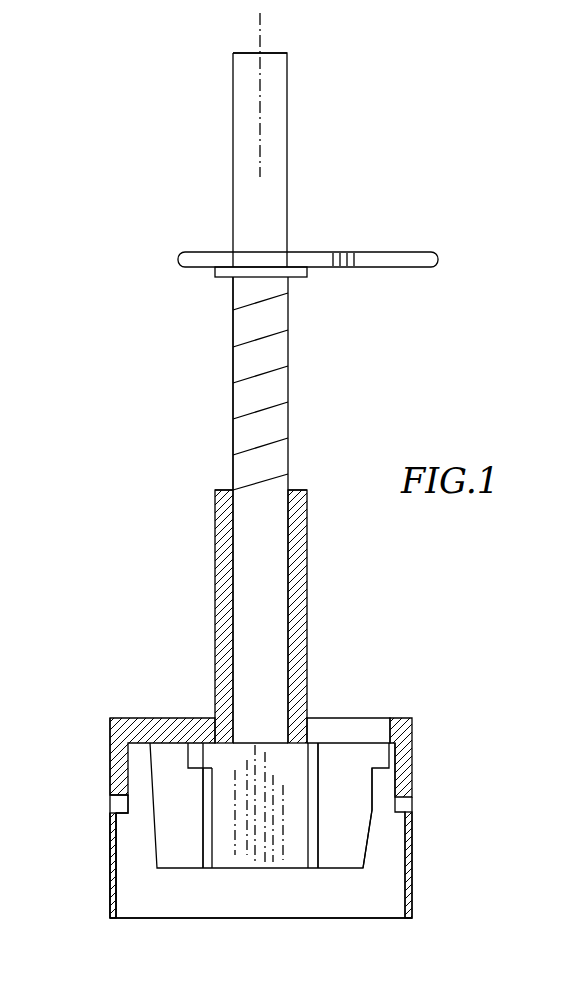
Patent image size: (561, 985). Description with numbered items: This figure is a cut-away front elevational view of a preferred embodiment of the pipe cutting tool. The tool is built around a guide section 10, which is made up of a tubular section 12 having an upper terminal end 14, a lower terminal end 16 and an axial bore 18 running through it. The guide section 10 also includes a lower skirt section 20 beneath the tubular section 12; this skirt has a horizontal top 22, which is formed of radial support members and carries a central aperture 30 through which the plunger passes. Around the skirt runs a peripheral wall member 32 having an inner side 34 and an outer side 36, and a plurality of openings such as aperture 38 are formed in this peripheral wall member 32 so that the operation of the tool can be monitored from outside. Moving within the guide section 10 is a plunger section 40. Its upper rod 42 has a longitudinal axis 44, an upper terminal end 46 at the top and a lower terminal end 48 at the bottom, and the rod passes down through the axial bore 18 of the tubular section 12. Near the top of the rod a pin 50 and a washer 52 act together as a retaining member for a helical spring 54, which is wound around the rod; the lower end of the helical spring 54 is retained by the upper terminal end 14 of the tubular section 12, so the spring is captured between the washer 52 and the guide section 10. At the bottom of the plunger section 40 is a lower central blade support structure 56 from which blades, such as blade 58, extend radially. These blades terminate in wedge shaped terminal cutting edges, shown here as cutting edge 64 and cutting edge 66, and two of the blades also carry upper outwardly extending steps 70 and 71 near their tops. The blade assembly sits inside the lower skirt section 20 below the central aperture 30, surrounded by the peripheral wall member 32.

The guide section 10 is at (374, 632).
The tubular section 12 is at (307, 542).
The upper terminal end 14 is at (305, 490).
The lower terminal end 16 is at (313, 720).
The axial bore 18 is at (245, 567).
The lower skirt section 20 is at (428, 706).
The horizontal top 22 is at (370, 718).
The central aperture 30 is at (240, 700).
The peripheral wall member 32 is at (118, 752).
The inner side 34 is at (117, 860).
The outer side 36 is at (112, 852).
The aperture 38 is at (113, 805).
The plunger section 40 is at (318, 347).
The upper rod 42 is at (287, 110).
The longitudinal axis 44 is at (262, 25).
The upper terminal end 46 is at (247, 52).
The lower terminal end 48 is at (290, 747).
The pin 50 is at (318, 252).
The washer 52 is at (220, 278).
The helical spring 54 is at (233, 385).
The lower central blade support structure 56 is at (243, 870).
The blade 58 is at (225, 850).
The wedge shaped terminal cutting edge 64 is at (198, 783).
The wedge shaped terminal cutting edge 66 is at (372, 810).
The upper outwardly extending step 70 is at (198, 750).
The upper outwardly extending step 71 is at (393, 757).